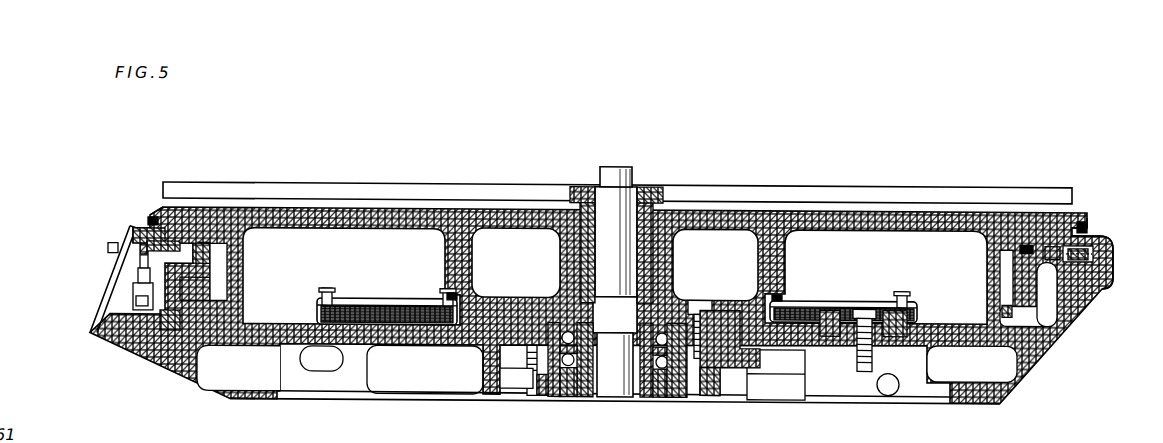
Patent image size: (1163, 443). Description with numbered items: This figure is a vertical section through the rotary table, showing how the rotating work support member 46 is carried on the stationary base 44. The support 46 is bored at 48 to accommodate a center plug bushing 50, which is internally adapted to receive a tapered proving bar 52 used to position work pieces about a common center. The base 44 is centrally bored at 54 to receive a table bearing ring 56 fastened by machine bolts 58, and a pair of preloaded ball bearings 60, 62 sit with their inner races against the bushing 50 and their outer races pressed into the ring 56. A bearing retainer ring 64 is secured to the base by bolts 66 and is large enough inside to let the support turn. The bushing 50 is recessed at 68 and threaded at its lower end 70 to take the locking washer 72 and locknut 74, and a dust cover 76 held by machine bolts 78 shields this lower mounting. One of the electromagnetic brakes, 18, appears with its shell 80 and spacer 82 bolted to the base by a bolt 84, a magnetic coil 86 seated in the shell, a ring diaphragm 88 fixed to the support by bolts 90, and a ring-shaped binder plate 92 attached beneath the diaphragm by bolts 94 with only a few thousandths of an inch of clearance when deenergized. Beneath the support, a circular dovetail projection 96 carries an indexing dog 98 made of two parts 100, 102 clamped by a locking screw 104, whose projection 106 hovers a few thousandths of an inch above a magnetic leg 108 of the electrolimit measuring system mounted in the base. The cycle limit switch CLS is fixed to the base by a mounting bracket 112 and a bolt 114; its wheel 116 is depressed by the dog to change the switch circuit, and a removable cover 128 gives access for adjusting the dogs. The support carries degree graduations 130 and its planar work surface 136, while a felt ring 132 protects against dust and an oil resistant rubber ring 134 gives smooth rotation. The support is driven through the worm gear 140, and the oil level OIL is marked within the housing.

The brake 18 is at (851, 264).
The base 44 is at (183, 345).
The support member 46 is at (1016, 218).
The bore 48 is at (652, 246).
The center plug bushing 50 is at (647, 188).
The tapered proving bar 52 is at (602, 190).
The central bore 54 is at (742, 362).
The table bearing ring 56 is at (703, 392).
The machine bolts 58 is at (523, 392).
The ball bearing 60 is at (656, 340).
The ball bearing 62 is at (656, 362).
The bearing retainer ring 64 is at (726, 300).
The bolts 66 is at (690, 296).
The recess 68 is at (598, 392).
The threaded lower end 70 is at (578, 392).
The washer 72 is at (560, 394).
The locknut 74 is at (650, 396).
The dust cover 76 is at (672, 397).
The machine bolts 78 is at (543, 395).
The shell 80 is at (822, 348).
The spacer 82 is at (842, 345).
The bolt 84 is at (866, 350).
The magnetic coil 86 is at (918, 302).
The ring diaphragm 88 is at (362, 298).
The bolts 90 is at (447, 292).
The binder plate 92 is at (380, 300).
The bolts 94 is at (328, 289).
The circular dovetail projection 96 is at (1110, 236).
The indexing dog 98 is at (1092, 262).
The dog part 100 is at (188, 238).
The dog part 102 is at (137, 230).
The locking screw 104 is at (140, 244).
The projection 106 is at (192, 252).
The magnetic leg 108 is at (196, 268).
The mounting bracket 112 is at (165, 332).
The bolt 114 is at (143, 333).
The wheel 116 is at (130, 263).
The removable cover 128 is at (118, 290).
The graduations 130 is at (150, 214).
The felt ring 132 is at (205, 243).
The oil resistant rubber ring 134 is at (150, 222).
The planar surface 136 is at (752, 182).
The worm gear 140 is at (228, 290).
The cycle limit switch CLS is at (136, 296).
The oil level OIL is at (470, 292).